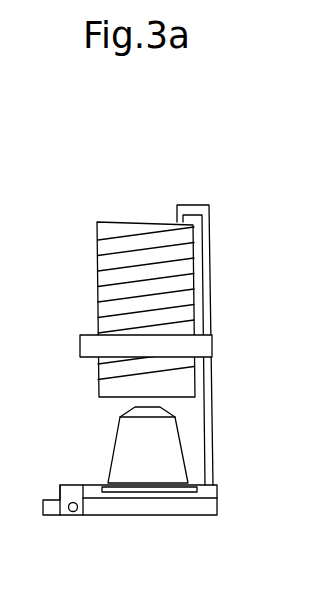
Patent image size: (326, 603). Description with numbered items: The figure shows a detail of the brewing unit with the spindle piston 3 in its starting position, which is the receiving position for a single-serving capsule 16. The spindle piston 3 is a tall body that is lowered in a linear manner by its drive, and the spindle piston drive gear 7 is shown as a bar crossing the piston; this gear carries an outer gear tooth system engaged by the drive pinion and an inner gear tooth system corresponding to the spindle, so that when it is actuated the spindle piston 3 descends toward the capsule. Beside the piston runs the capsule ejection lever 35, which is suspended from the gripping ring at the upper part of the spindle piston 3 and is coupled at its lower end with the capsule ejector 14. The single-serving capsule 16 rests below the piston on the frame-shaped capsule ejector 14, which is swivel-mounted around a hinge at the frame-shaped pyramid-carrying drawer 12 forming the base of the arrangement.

The spindle piston 3 is at (97, 267).
The spindle piston drive gear 7 is at (80, 348).
The capsule ejection lever 35 is at (212, 285).
The single-serving capsule 16 is at (115, 435).
The capsule ejector 14 is at (82, 493).
The pyramid-carrying drawer 12 is at (115, 520).